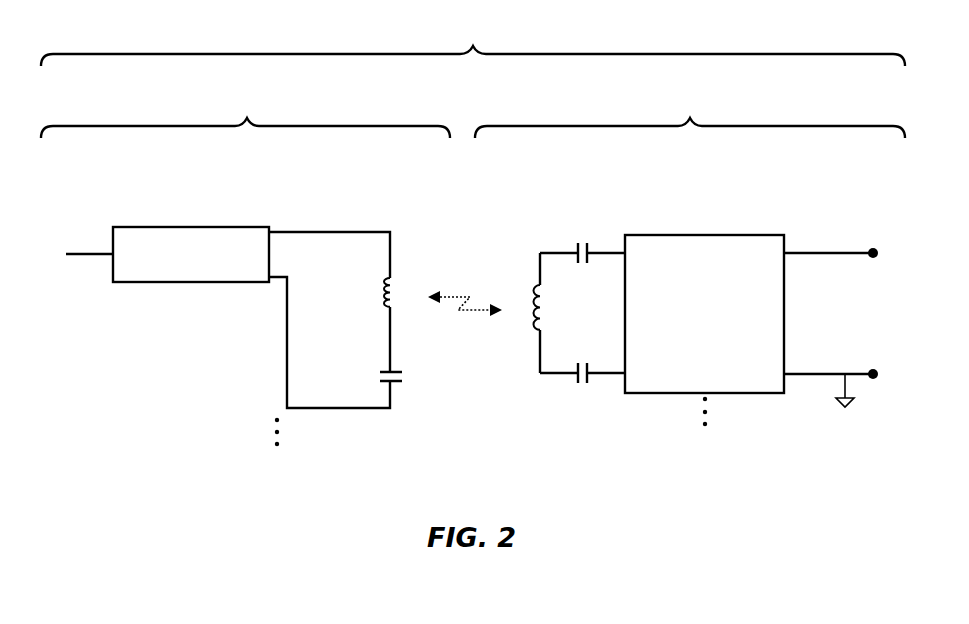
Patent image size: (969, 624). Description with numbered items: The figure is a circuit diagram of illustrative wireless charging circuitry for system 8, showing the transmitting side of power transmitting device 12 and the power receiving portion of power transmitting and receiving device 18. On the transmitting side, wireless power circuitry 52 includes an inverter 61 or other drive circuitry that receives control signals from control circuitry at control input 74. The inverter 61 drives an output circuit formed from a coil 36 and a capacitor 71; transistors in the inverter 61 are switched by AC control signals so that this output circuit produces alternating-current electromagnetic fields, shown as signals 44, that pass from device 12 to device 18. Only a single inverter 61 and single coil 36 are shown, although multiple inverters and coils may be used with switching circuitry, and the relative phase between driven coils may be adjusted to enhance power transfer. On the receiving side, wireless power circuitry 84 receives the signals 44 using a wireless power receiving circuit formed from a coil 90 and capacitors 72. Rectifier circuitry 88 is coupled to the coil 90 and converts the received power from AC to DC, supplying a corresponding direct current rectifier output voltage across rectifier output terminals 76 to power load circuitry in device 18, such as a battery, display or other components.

The system 8 is at (473, 45).
The power transmitting device 12 is at (245, 117).
The power transmitting and receiving device 18 is at (690, 117).
The inverter 61 is at (190, 227).
The control input 74 is at (88, 252).
The coil 36 is at (394, 273).
The capacitor 71 is at (394, 388).
The wireless power circuitry 52 is at (218, 385).
The signals 44 is at (468, 296).
The coil 90 is at (535, 339).
The capacitor 72 is at (589, 233).
The rectifier circuitry 88 is at (705, 235).
The wireless power circuitry 84 is at (674, 436).
The rectifier output terminals 76 is at (873, 248).